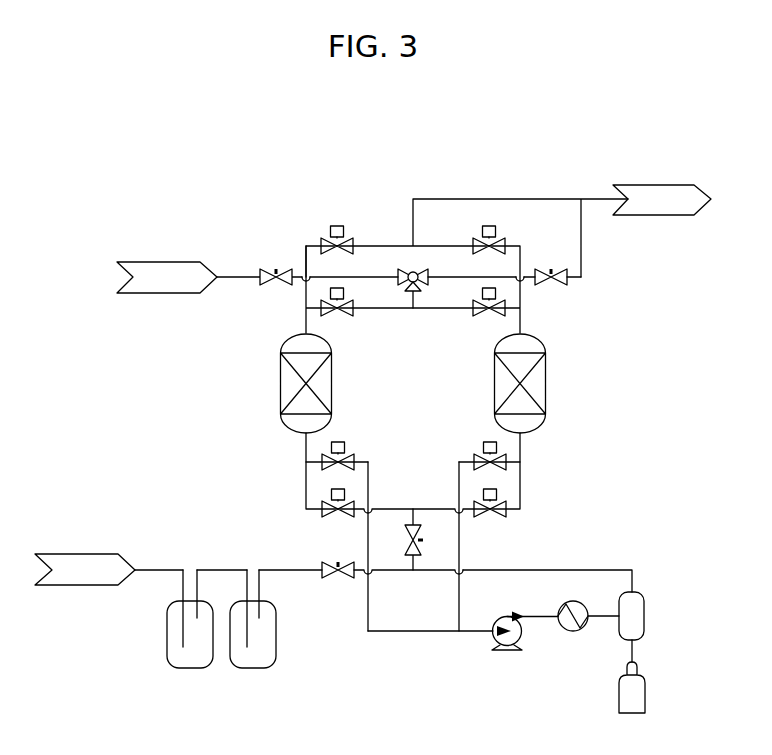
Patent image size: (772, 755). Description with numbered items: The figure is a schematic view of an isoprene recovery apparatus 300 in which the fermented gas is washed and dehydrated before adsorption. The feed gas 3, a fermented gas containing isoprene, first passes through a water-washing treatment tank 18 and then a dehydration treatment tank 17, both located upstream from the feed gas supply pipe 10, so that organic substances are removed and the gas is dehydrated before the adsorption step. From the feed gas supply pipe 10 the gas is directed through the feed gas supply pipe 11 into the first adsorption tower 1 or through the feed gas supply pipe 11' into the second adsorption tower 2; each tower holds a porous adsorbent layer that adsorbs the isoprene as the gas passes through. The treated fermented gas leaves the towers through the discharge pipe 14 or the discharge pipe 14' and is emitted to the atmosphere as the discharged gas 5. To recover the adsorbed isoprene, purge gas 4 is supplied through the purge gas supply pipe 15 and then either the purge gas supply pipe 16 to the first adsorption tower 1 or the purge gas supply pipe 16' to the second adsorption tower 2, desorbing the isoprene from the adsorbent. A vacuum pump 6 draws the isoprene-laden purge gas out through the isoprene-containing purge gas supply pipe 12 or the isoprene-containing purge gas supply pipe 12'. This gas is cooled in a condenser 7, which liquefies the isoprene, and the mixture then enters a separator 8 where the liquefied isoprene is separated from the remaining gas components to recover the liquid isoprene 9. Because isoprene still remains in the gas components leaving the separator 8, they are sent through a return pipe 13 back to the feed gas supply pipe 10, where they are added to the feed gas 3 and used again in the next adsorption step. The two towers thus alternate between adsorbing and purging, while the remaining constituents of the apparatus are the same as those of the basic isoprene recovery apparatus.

The isoprene recovery apparatus 300 is at (546, 150).
The first adsorption tower 1 is at (280, 384).
The second adsorption tower 2 is at (494, 384).
The feed gas 3 is at (80, 586).
The purge gas 4 is at (158, 294).
The discharged gas 5 is at (660, 216).
The vacuum pump 6 is at (506, 651).
The condenser 7 is at (573, 632).
The separator 8 is at (645, 616).
The liquid isoprene 9 is at (646, 698).
The feed gas supply pipe 10 is at (290, 571).
The feed gas supply pipe 11 is at (308, 479).
The feed gas supply pipe 11' is at (523, 479).
The isoprene-containing purge gas supply pipe 12 is at (391, 546).
The isoprene-containing purge gas supply pipe 12' is at (434, 546).
The return pipe 13 is at (588, 569).
The discharge pipe 14 is at (355, 229).
The discharge pipe 14' is at (470, 229).
The purge gas supply pipe 15 is at (238, 278).
The purge gas supply pipe 16 is at (355, 320).
The purge gas supply pipe 16' is at (470, 320).
The dehydration treatment tank 17 is at (251, 669).
The water-washing treatment tank 18 is at (190, 669).